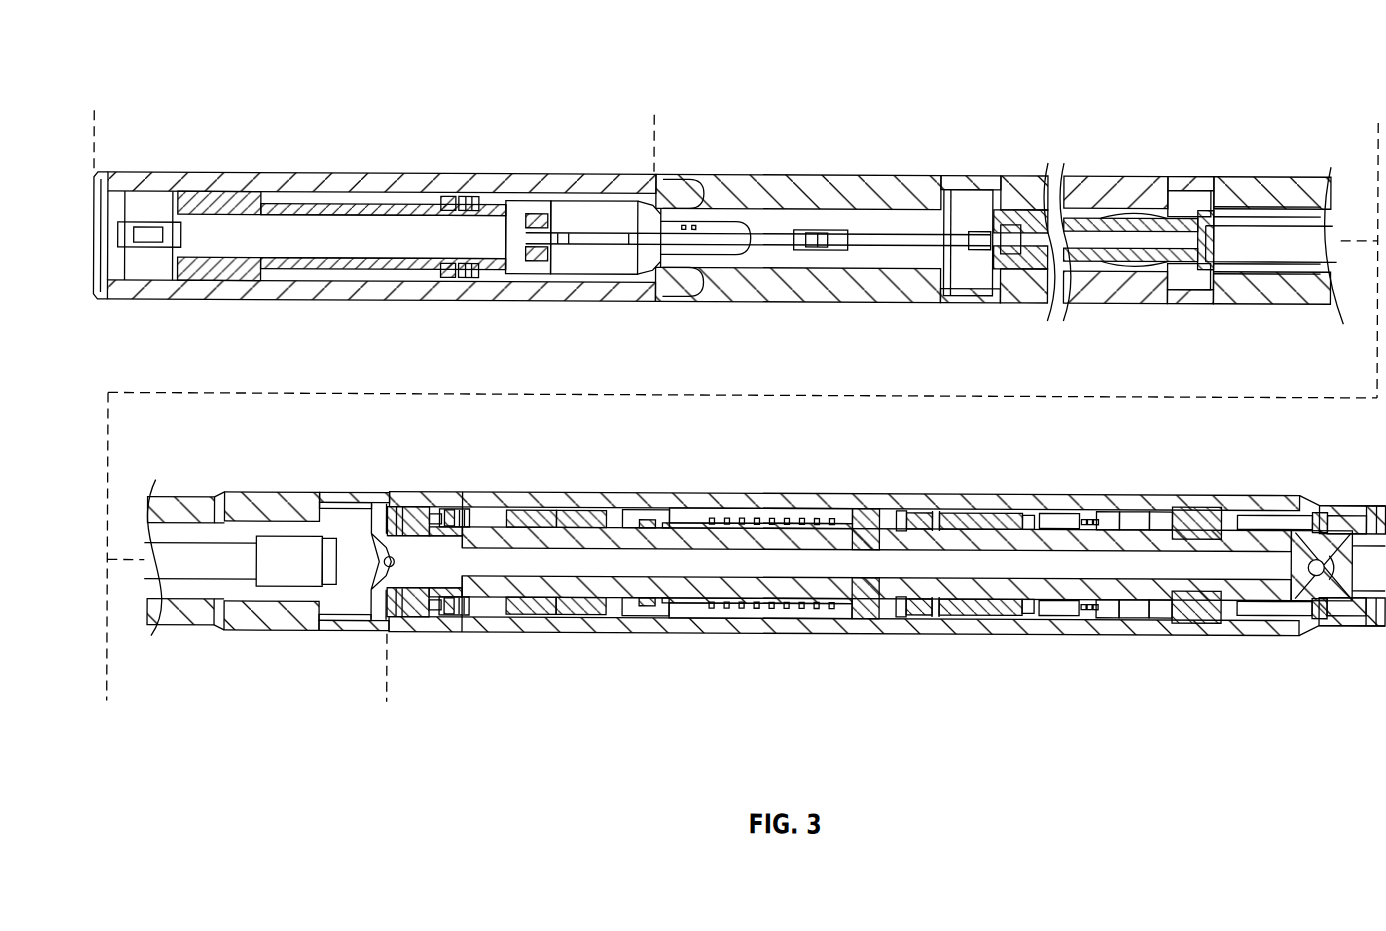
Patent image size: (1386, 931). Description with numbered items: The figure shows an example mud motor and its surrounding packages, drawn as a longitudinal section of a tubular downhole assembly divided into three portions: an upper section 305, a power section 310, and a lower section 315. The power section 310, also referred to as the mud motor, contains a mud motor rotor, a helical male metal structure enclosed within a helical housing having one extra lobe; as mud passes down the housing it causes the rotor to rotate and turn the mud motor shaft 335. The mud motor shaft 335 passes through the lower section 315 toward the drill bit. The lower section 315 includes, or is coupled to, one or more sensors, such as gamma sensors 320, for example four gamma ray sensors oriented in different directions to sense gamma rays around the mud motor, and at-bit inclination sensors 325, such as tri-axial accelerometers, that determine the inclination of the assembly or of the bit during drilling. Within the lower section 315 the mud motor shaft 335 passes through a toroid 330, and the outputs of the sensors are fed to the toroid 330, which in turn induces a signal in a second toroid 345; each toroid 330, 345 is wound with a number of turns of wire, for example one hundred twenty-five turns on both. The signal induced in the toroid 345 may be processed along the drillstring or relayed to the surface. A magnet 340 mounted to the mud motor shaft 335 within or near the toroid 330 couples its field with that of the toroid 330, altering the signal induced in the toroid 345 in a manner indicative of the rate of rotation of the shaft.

The upper section 305 is at (653, 115).
The power section 310 is at (1377, 120).
The lower section 315 is at (388, 680).
The gamma sensors 320 is at (980, 520).
The at-bit inclination sensors 325 is at (765, 510).
The toroid 330 is at (456, 509).
The mud motor shaft 335 is at (630, 567).
The magnet 340 is at (447, 565).
The toroid 345 is at (458, 199).